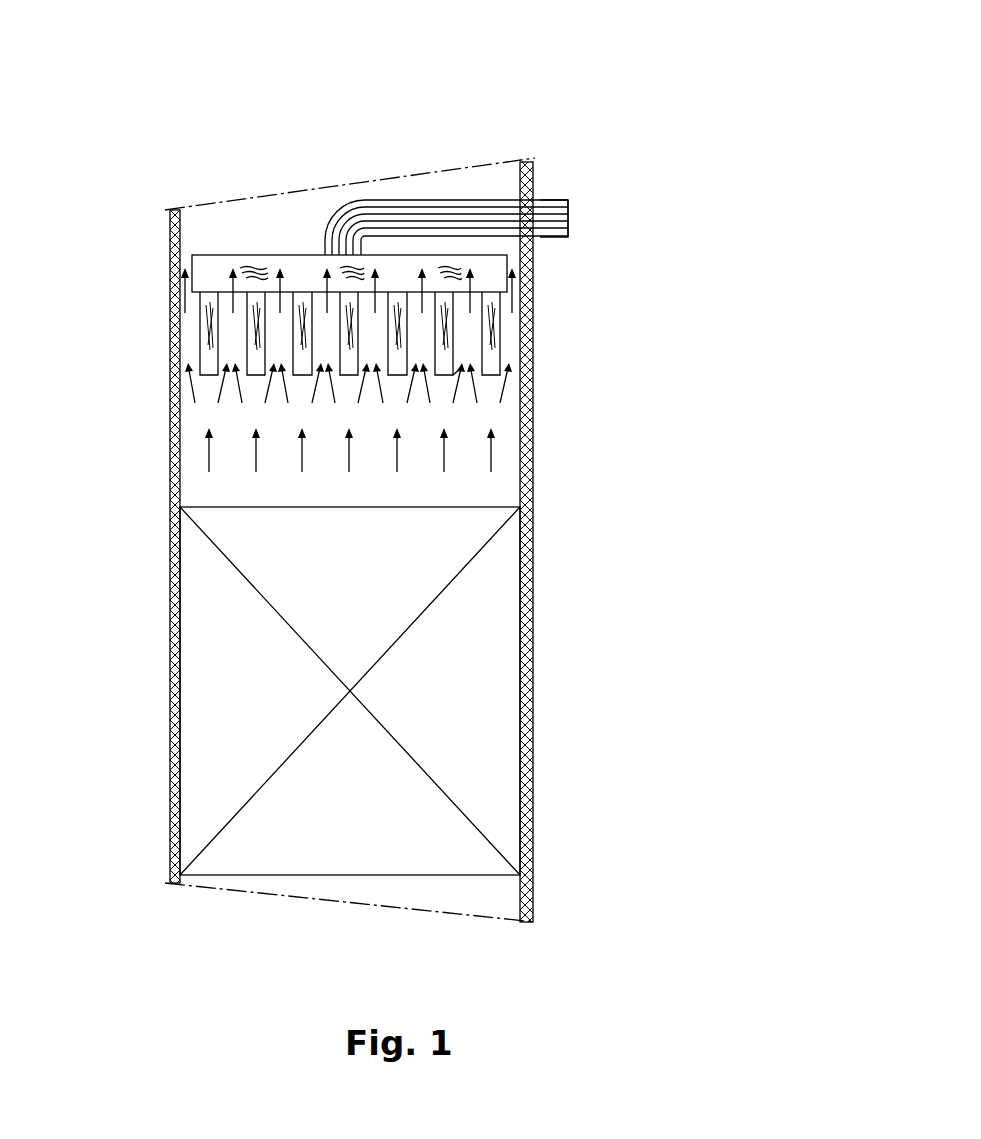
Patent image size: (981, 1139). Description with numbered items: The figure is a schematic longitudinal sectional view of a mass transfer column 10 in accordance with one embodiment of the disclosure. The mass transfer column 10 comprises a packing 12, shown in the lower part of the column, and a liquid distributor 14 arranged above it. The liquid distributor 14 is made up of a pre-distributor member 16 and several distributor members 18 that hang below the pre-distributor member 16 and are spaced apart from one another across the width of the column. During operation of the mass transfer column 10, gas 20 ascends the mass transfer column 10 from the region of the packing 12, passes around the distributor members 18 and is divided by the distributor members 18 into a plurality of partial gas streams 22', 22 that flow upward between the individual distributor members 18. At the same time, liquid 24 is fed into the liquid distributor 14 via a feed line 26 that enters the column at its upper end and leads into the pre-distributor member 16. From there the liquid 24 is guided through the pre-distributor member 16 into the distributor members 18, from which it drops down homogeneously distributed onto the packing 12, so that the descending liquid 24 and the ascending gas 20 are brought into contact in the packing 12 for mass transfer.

The mass transfer column 10 is at (562, 110).
The packing 12 is at (483, 674).
The liquid distributor 14 is at (240, 250).
The pre-distributor member 16 is at (302, 278).
The distributor members 18 is at (207, 322).
The gas 20 is at (493, 449).
The partial gas stream 22 is at (348, 470).
The partial gas stream 22' is at (536, 435).
The liquid 24 is at (586, 218).
The feed line 26 is at (547, 218).